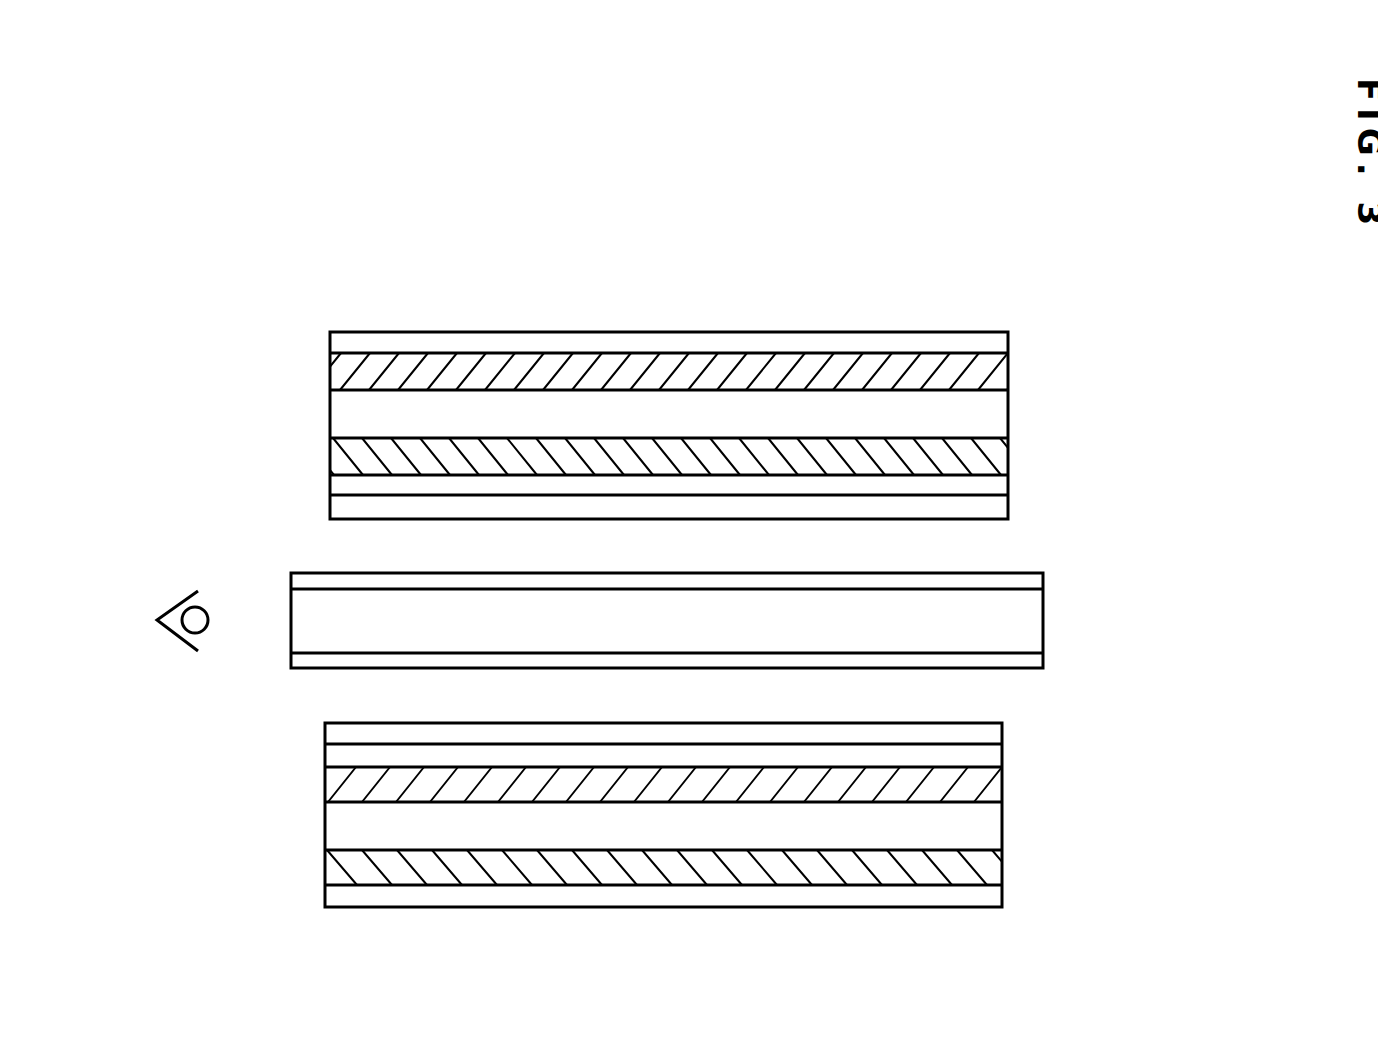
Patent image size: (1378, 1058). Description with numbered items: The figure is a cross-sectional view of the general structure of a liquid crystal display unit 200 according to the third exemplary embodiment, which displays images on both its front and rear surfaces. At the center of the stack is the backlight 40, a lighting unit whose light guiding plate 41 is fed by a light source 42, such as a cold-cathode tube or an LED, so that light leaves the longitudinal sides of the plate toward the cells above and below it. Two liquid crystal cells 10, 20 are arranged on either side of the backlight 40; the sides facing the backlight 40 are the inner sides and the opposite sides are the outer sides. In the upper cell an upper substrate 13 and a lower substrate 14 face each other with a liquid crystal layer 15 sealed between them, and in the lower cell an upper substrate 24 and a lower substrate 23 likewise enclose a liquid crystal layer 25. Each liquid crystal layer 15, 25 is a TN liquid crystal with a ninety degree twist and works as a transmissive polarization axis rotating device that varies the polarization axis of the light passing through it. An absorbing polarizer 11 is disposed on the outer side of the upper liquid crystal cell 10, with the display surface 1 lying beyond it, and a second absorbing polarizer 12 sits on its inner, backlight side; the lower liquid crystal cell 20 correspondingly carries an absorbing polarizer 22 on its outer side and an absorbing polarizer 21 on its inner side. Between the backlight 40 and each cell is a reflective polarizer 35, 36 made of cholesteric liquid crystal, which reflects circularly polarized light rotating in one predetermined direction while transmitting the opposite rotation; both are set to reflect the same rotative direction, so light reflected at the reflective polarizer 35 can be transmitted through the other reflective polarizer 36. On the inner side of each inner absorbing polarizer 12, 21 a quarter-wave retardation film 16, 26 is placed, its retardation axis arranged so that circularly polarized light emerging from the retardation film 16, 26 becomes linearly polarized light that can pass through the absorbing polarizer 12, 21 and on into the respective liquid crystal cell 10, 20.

The liquid crystal display unit 200 is at (1020, 189).
The display surface 1 is at (483, 332).
The liquid crystal cell 10 is at (1112, 330).
The absorbing polarizer 11 is at (996, 348).
The upper substrate 13 is at (996, 376).
The liquid crystal layer 15 is at (996, 416).
The lower substrate 14 is at (996, 456).
The absorbing polarizer 12 is at (996, 488).
The λ/4 retardation film 16 is at (996, 512).
The backlight 40 is at (1166, 621).
The reflective polarizer 35 is at (1032, 585).
The light guiding plate 41 is at (1032, 622).
The reflective polarizer 36 is at (1032, 666).
The liquid crystal cell 20 is at (1112, 716).
The λ/4 retardation film 26 is at (990, 739).
The absorbing polarizer 21 is at (990, 763).
The lower substrate 23 is at (990, 792).
The liquid crystal layer 25 is at (990, 830).
The upper substrate 24 is at (990, 870).
The absorbing polarizer 22 is at (990, 903).
The light source 42 is at (190, 622).